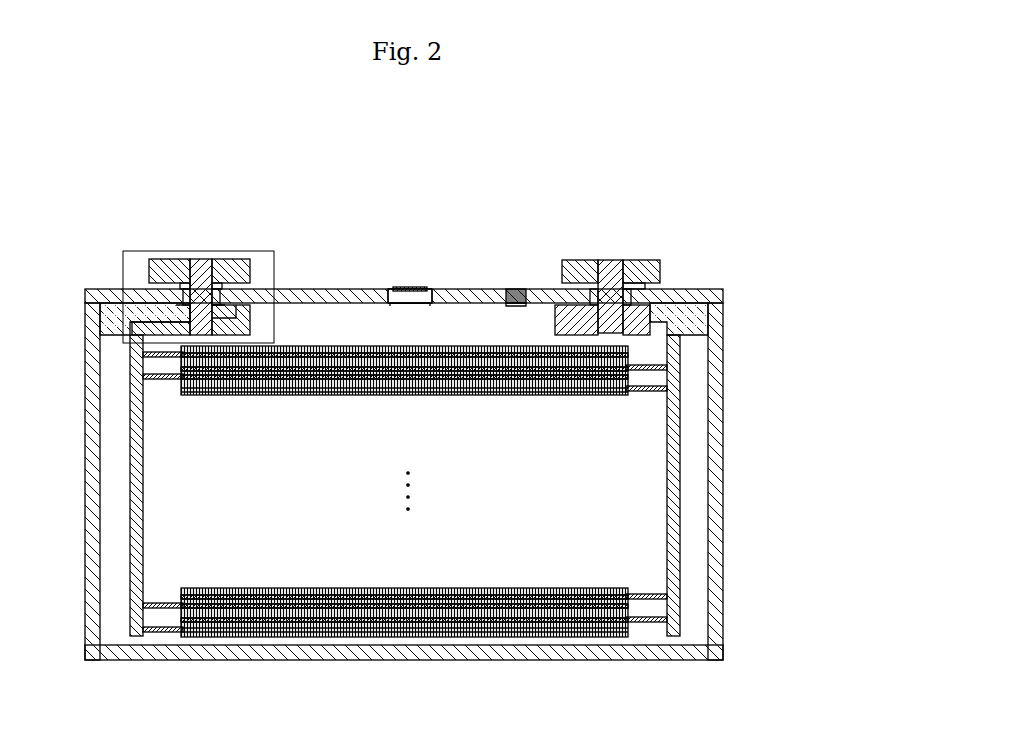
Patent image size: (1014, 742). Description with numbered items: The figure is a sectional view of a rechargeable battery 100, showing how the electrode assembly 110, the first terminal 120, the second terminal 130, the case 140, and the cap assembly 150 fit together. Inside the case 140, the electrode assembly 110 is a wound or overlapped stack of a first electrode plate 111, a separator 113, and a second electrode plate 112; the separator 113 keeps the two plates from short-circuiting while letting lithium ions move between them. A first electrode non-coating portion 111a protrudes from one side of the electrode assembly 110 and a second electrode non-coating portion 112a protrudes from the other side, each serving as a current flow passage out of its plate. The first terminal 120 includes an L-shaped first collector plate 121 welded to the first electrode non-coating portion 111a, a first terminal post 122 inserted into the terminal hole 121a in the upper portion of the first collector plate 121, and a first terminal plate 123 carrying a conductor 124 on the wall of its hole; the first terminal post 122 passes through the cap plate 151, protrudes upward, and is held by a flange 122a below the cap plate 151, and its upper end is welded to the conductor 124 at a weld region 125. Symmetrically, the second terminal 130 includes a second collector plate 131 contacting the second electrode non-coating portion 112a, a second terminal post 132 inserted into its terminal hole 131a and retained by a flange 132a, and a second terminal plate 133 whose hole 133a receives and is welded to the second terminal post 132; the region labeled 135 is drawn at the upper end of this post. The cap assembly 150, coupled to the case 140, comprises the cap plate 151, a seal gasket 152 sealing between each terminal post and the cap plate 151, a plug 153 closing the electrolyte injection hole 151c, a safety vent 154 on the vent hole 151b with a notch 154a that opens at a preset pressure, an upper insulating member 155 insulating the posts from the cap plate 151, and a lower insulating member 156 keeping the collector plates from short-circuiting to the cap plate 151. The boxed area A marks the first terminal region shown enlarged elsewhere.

The rechargeable battery 100 is at (752, 137).
The electrode assembly 110 is at (403, 532).
The first electrode plate 111 is at (285, 638).
The first electrode non-coating portion 111a is at (161, 632).
The second electrode plate 112 is at (556, 638).
The second electrode non-coating portion 112a is at (647, 628).
The separator 113 is at (418, 614).
The first terminal 120 is at (236, 190).
The first collector plate 121 is at (157, 322).
The terminal hole 121a is at (134, 346).
The first terminal post 122 is at (242, 266).
The flange 122a is at (228, 314).
The first terminal plate 123 is at (245, 260).
The conductor 124 is at (207, 260).
The weld region 125 is at (191, 283).
The second terminal 130 is at (705, 195).
The second collector plate 131 is at (687, 305).
The terminal hole 131a is at (618, 346).
The second terminal post 132 is at (650, 305).
The flange 132a is at (562, 320).
The second terminal plate 133 is at (598, 260).
The hole 133a is at (640, 289).
The second terminal pillar 135 is at (618, 260).
The case 140 is at (720, 390).
The cap assembly 150 is at (477, 209).
The cap plate 151 is at (404, 287).
The vent hole 151b is at (404, 306).
The electrolyte injection hole 151c is at (512, 306).
The seal gasket 152 is at (232, 303).
The plug 153 is at (515, 288).
The safety vent 154 is at (415, 268).
The notch 154a is at (405, 287).
The upper insulating member 155 is at (222, 300).
The lower insulating member 156 is at (110, 313).
The region A is at (122, 266).